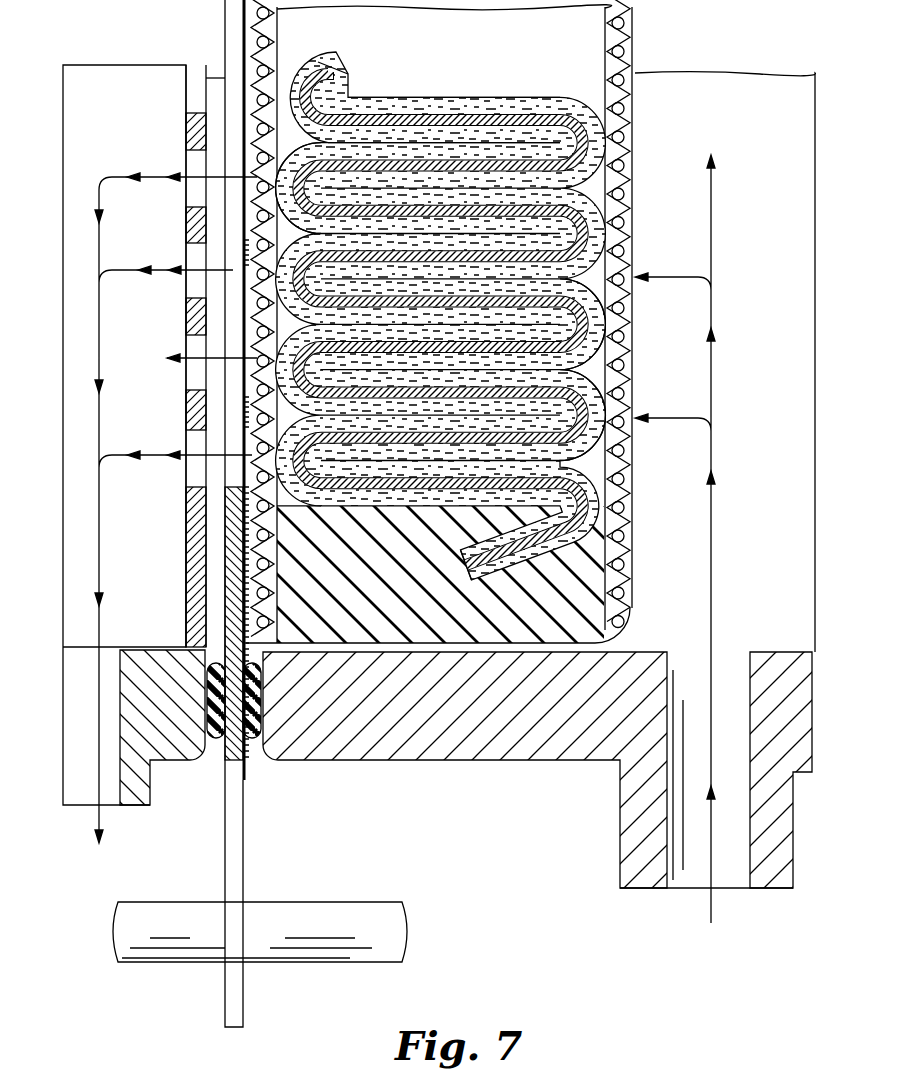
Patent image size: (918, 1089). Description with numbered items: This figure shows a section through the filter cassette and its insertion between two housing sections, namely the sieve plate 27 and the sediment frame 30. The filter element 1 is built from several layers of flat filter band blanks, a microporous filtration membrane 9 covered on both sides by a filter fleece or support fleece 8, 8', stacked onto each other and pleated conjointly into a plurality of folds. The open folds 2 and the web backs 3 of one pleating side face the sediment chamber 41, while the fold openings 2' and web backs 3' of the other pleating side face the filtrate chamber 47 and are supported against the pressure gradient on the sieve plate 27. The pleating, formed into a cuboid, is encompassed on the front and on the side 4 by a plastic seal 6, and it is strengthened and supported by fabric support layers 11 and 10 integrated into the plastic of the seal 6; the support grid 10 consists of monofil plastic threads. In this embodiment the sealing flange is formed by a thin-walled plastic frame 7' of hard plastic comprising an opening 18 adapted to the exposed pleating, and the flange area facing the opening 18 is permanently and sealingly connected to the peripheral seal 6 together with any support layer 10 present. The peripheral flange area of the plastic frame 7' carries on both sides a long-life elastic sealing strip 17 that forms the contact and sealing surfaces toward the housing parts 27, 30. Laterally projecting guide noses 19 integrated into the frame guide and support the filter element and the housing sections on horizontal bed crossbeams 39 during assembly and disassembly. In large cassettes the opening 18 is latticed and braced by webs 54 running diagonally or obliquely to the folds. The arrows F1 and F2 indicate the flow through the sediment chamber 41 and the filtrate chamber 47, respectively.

The filter element 1 is at (497, 95).
The open folds 2 is at (620, 386).
The fold openings 2' is at (229, 195).
The web backs 3 is at (487, 301).
The web backs 3' is at (229, 187).
The side 4 is at (471, 572).
The plastic seal 6 is at (450, 650).
The plastic frame 7' is at (191, 623).
The filter fleece or support fleece 8 is at (444, 96).
The filter fleece or support fleece 8' is at (454, 74).
The microporous filtration membrane 9 is at (377, 116).
The support grid 10 is at (257, 43).
The fabric support layer 11 is at (633, 125).
The sealing strip 17 is at (207, 722).
The opening 18 is at (241, 492).
The guide noses 19 is at (232, 858).
The sieve plate 27 is at (200, 605).
The sediment frame 30 is at (366, 742).
The bed crossbeams 39 is at (318, 915).
The sediment chamber 41 is at (662, 574).
The filtrate chamber 47 is at (132, 354).
The webs 54 is at (232, 287).
The flow direction F1 is at (663, 276).
The flow direction F2 is at (195, 176).